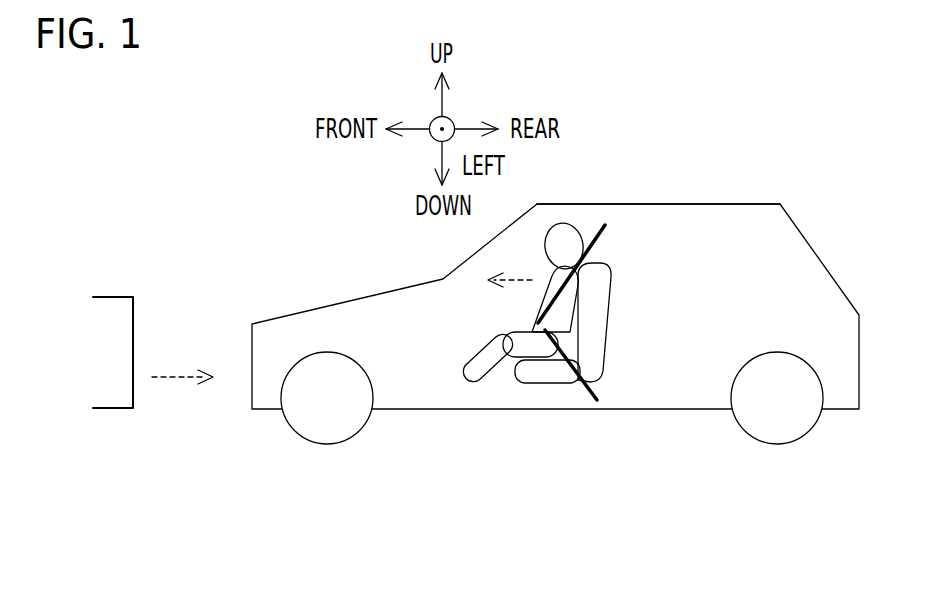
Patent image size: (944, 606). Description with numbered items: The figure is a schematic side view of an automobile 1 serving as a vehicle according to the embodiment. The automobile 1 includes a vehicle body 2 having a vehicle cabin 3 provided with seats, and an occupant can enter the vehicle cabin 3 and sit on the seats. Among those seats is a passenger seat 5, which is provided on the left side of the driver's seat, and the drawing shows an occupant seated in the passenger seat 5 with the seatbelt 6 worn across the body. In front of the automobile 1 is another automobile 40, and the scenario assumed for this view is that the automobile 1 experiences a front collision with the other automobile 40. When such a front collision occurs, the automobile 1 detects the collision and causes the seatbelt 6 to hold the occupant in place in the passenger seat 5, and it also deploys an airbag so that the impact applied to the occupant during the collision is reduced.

The automobile 1 is at (555, 291).
The vehicle body 2 is at (292, 313).
The vehicle cabin 3 is at (663, 218).
The passenger seat 5 is at (592, 333).
The seatbelt 6 is at (598, 393).
The another automobile 40 is at (123, 297).